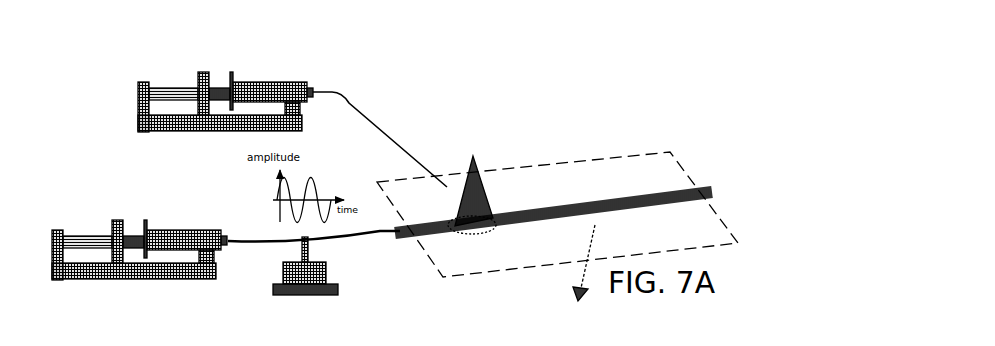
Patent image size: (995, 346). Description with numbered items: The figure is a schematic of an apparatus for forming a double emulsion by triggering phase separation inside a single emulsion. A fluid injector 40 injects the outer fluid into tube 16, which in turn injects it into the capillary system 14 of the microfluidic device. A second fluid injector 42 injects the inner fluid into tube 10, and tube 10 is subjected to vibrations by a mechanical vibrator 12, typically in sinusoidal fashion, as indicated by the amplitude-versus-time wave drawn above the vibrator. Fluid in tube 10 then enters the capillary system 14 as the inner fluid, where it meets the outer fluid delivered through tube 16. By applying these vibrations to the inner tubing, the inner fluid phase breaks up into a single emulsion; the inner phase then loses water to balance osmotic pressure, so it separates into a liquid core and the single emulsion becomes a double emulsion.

The fluid injector 40 is at (167, 68).
The second fluid injector 42 is at (108, 205).
The tube 16 is at (382, 108).
The capillary system 14 is at (575, 168).
The tube 10 is at (384, 224).
The mechanical vibrator 12 is at (282, 257).